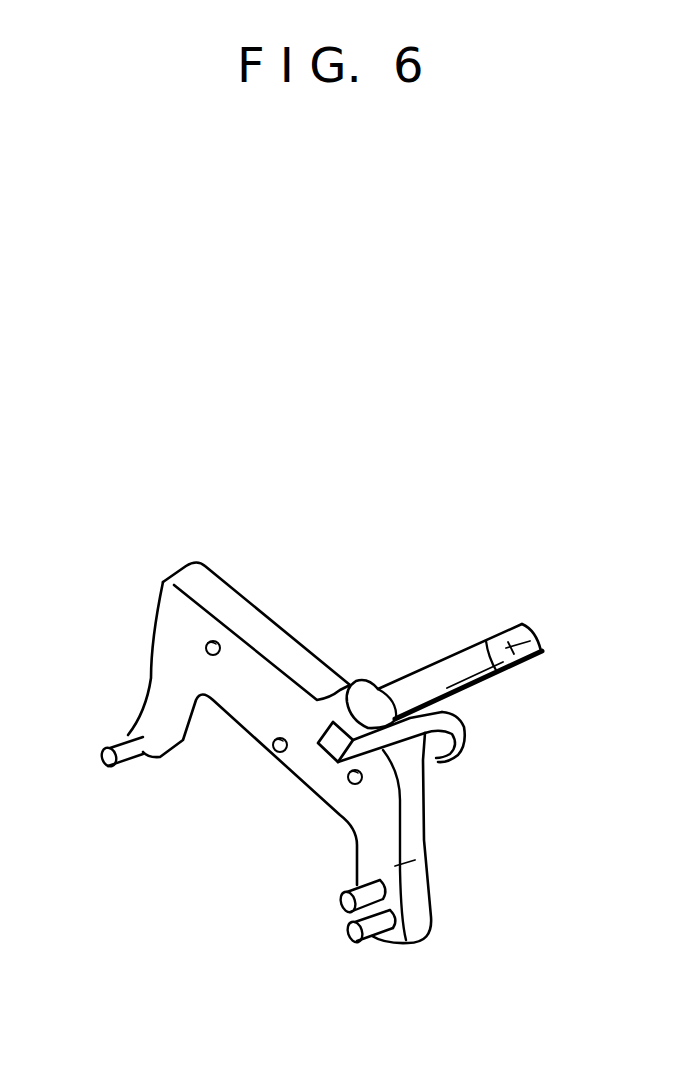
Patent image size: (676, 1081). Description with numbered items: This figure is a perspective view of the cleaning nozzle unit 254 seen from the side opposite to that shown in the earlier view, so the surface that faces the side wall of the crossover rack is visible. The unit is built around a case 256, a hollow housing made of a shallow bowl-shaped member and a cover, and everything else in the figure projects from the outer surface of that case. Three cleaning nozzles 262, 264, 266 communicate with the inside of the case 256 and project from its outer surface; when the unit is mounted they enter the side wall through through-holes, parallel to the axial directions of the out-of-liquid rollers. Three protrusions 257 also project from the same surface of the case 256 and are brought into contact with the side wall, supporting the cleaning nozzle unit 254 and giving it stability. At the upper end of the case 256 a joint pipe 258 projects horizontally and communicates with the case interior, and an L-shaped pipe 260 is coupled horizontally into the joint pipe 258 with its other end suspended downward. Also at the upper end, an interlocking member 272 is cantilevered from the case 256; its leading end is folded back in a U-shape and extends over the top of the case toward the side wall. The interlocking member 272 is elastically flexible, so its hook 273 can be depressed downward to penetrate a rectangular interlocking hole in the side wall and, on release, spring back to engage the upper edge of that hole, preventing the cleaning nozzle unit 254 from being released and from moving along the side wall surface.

The cleaning nozzle unit 254 is at (265, 545).
The case 256 is at (168, 602).
The protrusions 257 is at (205, 647).
The joint pipe 258 is at (448, 645).
The L-shaped pipe 260 is at (520, 661).
The cleaning nozzle 262 is at (373, 950).
The cleaning nozzle 264 is at (343, 902).
The cleaning nozzle 266 is at (123, 762).
The interlocking member 272 is at (436, 765).
The hook 273 is at (353, 735).